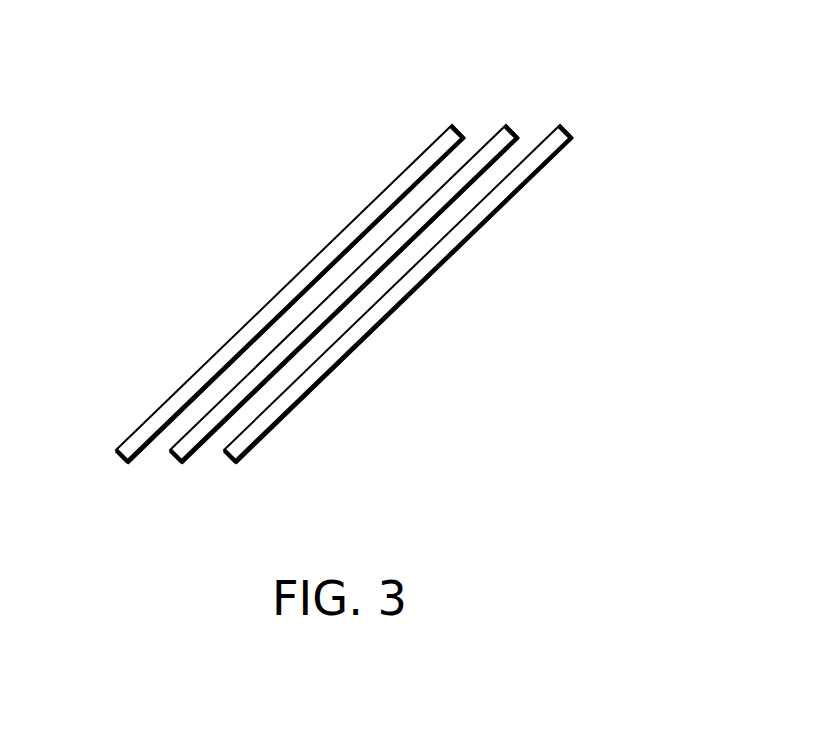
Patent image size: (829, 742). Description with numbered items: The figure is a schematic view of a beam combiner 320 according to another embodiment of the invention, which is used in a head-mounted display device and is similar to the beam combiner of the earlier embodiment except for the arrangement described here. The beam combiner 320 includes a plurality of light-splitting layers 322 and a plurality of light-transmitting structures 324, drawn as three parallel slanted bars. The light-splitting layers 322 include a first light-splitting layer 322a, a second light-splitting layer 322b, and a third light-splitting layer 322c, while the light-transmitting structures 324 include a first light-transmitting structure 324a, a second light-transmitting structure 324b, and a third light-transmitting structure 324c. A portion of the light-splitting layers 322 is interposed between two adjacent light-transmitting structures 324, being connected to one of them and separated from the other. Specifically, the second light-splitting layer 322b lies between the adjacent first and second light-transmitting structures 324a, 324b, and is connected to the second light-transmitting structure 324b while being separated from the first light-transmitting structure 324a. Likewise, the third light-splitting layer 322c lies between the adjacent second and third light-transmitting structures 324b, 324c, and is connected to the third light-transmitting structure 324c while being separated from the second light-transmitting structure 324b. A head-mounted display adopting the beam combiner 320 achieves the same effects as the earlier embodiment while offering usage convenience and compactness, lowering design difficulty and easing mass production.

The beam combiner 320 is at (142, 166).
The light-splitting layers 322 is at (421, 231).
The first light-splitting layer 322a is at (531, 182).
The second light-splitting layer 322b is at (477, 182).
The third light-splitting layer 322c is at (423, 182).
The light-transmitting structures 324 is at (344, 335).
The first light-transmitting structure 324a is at (252, 430).
The second light-transmitting structure 324b is at (187, 444).
The third light-transmitting structure 324c is at (132, 444).